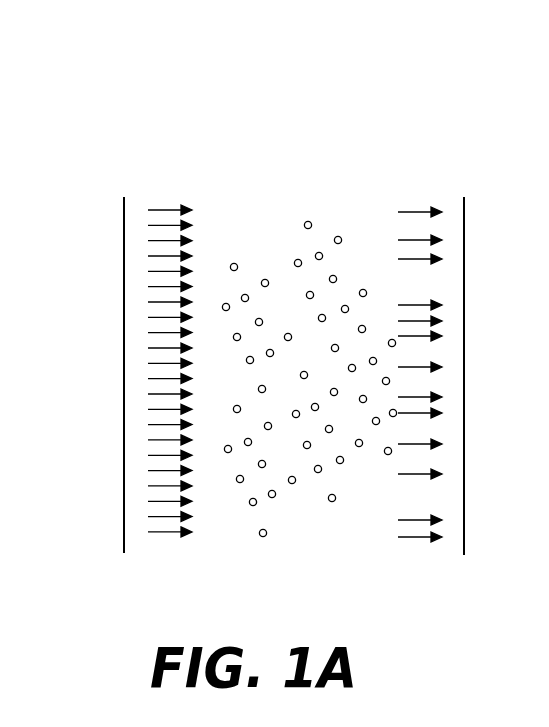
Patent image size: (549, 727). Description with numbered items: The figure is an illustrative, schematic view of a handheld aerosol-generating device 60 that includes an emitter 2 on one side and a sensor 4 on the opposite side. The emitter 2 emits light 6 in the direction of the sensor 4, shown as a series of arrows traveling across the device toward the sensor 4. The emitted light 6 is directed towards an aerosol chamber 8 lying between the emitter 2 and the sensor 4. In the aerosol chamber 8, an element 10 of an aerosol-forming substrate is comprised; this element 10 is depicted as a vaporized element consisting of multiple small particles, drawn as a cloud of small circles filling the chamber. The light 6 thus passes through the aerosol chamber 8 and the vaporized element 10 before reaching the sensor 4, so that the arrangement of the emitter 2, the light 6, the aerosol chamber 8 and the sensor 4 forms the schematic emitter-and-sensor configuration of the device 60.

The handheld aerosol-generating device 60 is at (244, 108).
The emitter 2 is at (124, 273).
The sensor 4 is at (464, 407).
The light 6 is at (160, 178).
The aerosol chamber 8 is at (299, 178).
The element of an aerosol-forming substrate 10 is at (332, 505).